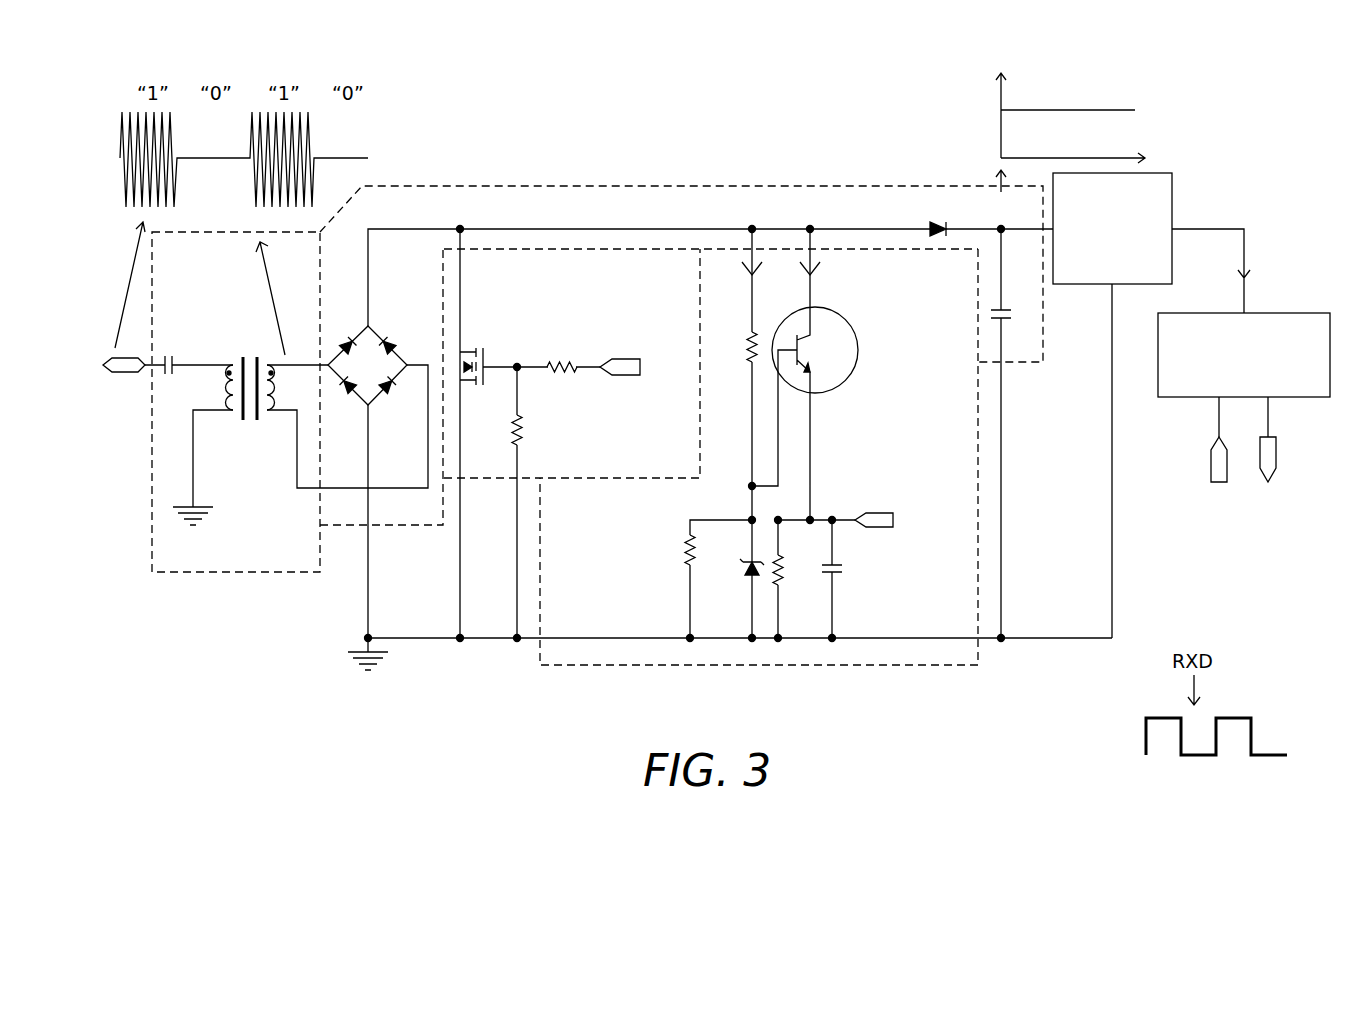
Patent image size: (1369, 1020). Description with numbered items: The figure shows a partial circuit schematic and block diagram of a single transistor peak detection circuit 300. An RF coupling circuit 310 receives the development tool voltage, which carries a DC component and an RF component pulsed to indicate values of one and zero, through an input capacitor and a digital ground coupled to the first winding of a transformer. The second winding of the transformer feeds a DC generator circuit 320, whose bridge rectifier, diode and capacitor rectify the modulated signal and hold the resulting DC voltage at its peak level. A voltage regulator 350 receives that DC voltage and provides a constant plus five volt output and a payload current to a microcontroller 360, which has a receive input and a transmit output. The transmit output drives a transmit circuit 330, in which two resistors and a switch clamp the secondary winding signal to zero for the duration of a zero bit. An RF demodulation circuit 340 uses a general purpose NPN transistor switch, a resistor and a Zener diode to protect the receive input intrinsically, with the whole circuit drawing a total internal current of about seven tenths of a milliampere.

The single transistor peak detection circuit 300 is at (263, 728).
The RF coupling circuit 310 is at (150, 520).
The DC generator circuit 320 is at (780, 184).
The transmit circuit 330 is at (508, 478).
The RF demodulation circuit 340 is at (800, 665).
The voltage regulator 350 is at (1125, 277).
The microcontroller 360 is at (1258, 393).